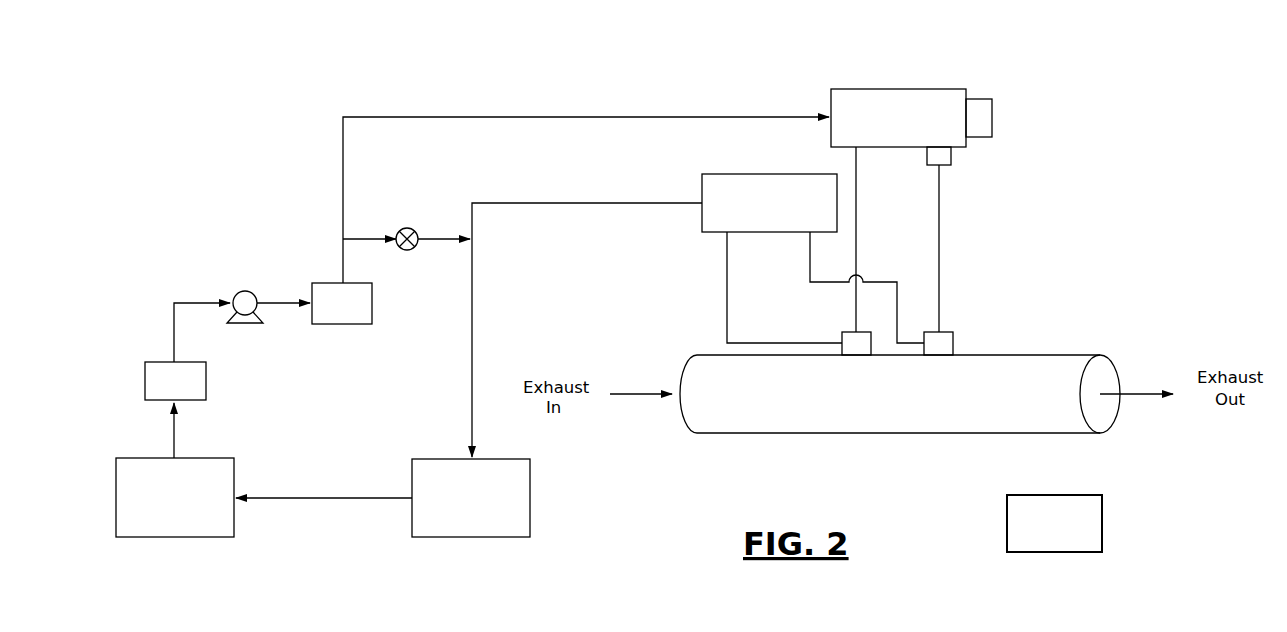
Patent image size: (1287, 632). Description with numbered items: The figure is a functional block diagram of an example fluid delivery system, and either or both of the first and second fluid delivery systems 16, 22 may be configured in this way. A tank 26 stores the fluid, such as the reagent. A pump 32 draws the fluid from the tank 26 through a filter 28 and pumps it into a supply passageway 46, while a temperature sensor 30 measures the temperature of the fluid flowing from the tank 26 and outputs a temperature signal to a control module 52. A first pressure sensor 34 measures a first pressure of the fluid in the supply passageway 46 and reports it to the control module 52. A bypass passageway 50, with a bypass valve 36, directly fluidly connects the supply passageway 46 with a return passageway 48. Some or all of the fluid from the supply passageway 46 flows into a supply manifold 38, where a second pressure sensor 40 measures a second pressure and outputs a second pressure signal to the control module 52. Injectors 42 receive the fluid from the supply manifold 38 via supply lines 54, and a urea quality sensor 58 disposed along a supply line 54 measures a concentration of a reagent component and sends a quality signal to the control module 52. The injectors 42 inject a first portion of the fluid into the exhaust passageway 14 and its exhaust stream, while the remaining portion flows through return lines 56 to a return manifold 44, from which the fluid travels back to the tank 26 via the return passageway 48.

The exhaust passageway 14 is at (897, 430).
The first fluid delivery system 16 is at (709, 47).
The second fluid delivery system 22 is at (668, 84).
The tank 26 is at (530, 498).
The filter 28 is at (173, 537).
The temperature sensor 30 is at (206, 380).
The pump 32 is at (245, 290).
The first pressure sensor 34 is at (343, 324).
The bypass valve 36 is at (407, 228).
The supply manifold 38 is at (897, 97).
The second pressure sensor 40 is at (985, 118).
The injectors 42 is at (848, 330).
The return manifold 44 is at (768, 180).
The supply passageway 46 is at (343, 188).
The return passageway 48 is at (472, 310).
The bypass passageway 50 is at (357, 240).
The control module 52 is at (1102, 523).
The supply lines 54 is at (858, 218).
The return lines 56 is at (810, 258).
The urea quality sensor 58 is at (951, 155).